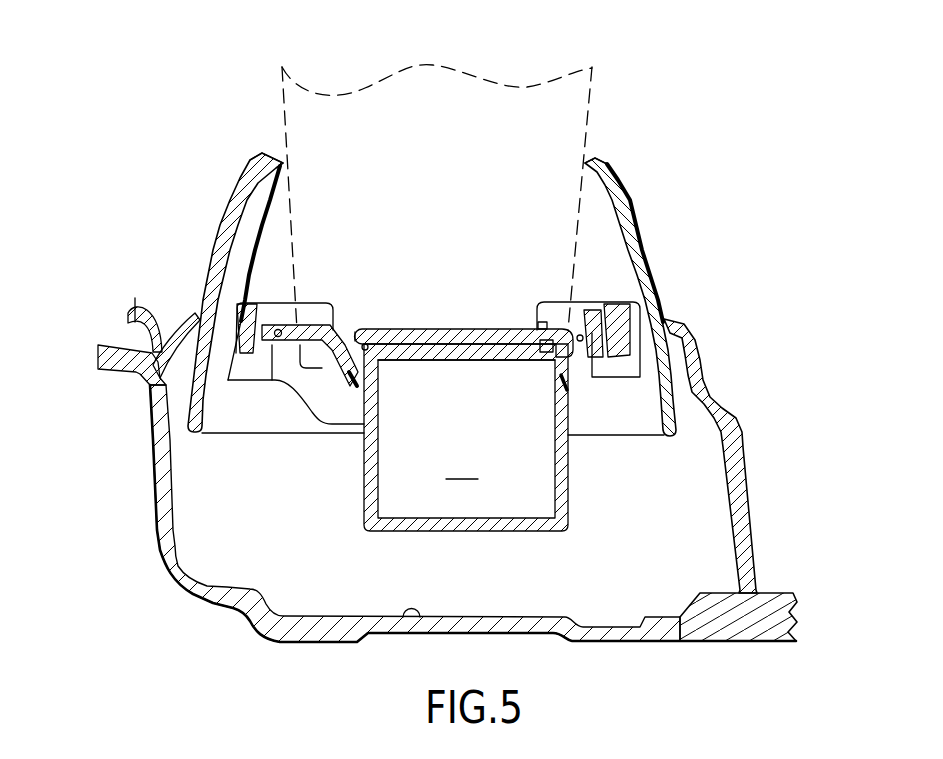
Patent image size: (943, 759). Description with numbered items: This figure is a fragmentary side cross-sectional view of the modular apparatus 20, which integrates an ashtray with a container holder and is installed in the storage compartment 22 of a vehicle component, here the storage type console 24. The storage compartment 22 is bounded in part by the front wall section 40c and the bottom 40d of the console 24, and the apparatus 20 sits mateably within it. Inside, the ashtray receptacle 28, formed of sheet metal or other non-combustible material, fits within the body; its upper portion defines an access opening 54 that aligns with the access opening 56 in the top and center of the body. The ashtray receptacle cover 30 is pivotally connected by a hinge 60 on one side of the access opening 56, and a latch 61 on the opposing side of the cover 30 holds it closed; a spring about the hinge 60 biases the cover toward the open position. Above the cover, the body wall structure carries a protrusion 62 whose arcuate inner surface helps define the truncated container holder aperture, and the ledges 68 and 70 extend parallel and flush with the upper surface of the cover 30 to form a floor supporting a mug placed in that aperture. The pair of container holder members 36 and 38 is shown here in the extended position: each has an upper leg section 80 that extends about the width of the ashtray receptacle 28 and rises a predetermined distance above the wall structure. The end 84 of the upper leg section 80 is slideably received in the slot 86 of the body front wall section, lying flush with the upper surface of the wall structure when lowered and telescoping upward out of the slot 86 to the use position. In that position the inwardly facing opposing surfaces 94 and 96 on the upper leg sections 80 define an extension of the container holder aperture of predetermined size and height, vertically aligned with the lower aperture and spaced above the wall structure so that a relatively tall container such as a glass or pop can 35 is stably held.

The modular apparatus 20 is at (754, 208).
The storage compartment 22 is at (631, 590).
The storage type console 24 is at (690, 641).
The ashtray receptacle 28 is at (466, 437).
The ashtray receptacle cover 30 is at (436, 330).
The pop can 35 is at (283, 107).
The container holder member 36 is at (653, 195).
The container holder member 38 is at (214, 199).
The front wall section 40c is at (153, 447).
The bottom 40d is at (380, 630).
The access opening 54 is at (443, 350).
The access opening 56 is at (347, 337).
The hinge 60 is at (370, 331).
The latch 61 is at (540, 318).
The protrusion 62 is at (580, 322).
The ledge 68 is at (583, 297).
The ledge 70 is at (310, 327).
The upper leg section 80 is at (645, 280).
The end of upper leg section 84 is at (282, 165).
The slot 86 is at (665, 321).
The inwardly facing opposing surface 94 is at (611, 193).
The inwardly facing opposing surface 96 is at (249, 222).